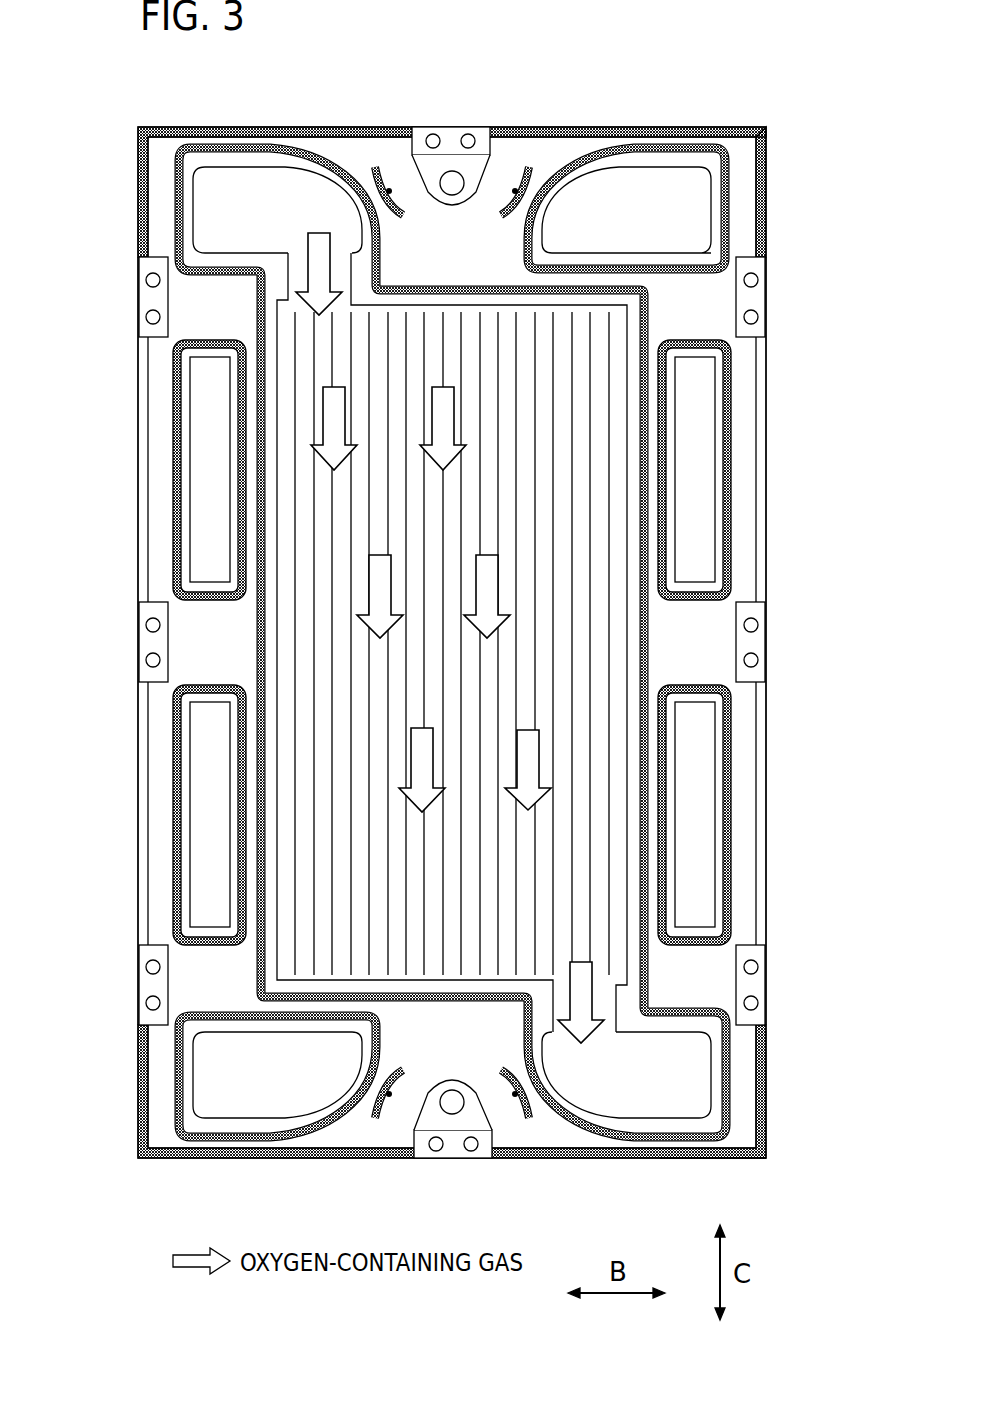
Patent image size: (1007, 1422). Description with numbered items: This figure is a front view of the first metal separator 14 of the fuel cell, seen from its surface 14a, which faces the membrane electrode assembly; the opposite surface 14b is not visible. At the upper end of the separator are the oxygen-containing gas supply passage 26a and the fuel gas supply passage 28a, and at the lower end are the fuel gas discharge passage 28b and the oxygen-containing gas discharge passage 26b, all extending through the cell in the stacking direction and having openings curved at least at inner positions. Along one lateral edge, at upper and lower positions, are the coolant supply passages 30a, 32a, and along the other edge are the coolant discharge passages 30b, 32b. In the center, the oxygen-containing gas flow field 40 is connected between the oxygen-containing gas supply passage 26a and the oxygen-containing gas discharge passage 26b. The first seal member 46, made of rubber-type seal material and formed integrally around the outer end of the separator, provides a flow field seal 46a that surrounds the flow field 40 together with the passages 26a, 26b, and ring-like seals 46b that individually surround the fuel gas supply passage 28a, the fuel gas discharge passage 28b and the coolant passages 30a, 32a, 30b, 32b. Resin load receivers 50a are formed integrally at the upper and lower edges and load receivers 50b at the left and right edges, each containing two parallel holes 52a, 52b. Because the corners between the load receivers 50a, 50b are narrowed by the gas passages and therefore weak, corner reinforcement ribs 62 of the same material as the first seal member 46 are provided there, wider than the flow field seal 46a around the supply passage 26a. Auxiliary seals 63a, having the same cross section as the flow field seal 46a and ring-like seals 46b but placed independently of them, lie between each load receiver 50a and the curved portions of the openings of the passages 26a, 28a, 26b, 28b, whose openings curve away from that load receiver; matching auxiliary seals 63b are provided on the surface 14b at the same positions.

The first metal separator 14 is at (667, 50).
The surface 14a is at (680, 1148).
The surface 14b is at (722, 1150).
The oxygen-containing gas supply passage 26a is at (277, 210).
The oxygen-containing gas discharge passage 26b is at (626, 1075).
The fuel gas supply passage 28a is at (626, 210).
The fuel gas discharge passage 28b is at (277, 1075).
The coolant supply passage 30a is at (210, 418).
The coolant discharge passage 30b is at (695, 418).
The coolant supply passage 32a is at (210, 761).
The coolant discharge passage 32b is at (695, 761).
The oxygen-containing gas flow field 40 is at (330, 650).
The first seal member 46 is at (700, 127).
The flow field seal 46a is at (446, 288).
The ring-like seal 46b is at (727, 210).
The load receiver 50a is at (446, 126).
The load receiver 50b is at (136, 632).
The hole 52a is at (146, 281).
The hole 52b is at (146, 317).
The corner reinforcement rib 62 is at (265, 127).
The auxiliary seal 63a is at (374, 165).
The auxiliary seal 63b is at (452, 642).